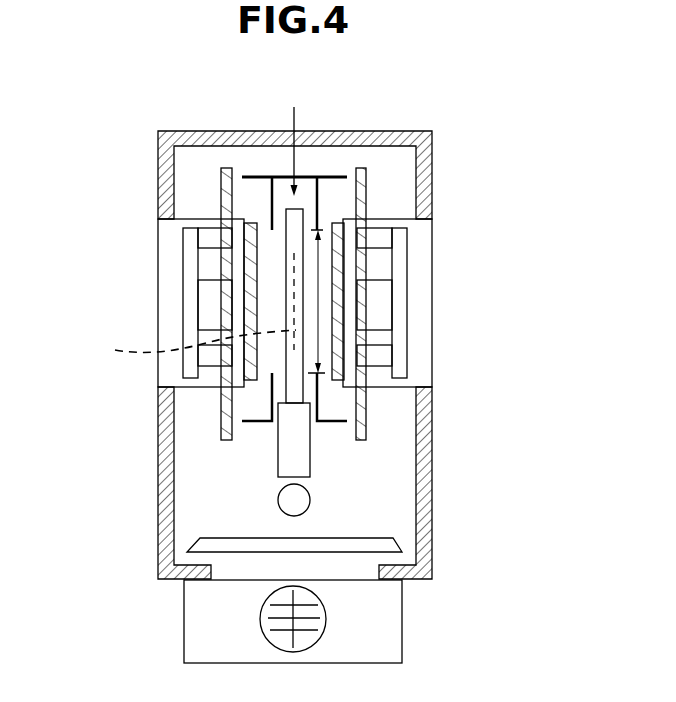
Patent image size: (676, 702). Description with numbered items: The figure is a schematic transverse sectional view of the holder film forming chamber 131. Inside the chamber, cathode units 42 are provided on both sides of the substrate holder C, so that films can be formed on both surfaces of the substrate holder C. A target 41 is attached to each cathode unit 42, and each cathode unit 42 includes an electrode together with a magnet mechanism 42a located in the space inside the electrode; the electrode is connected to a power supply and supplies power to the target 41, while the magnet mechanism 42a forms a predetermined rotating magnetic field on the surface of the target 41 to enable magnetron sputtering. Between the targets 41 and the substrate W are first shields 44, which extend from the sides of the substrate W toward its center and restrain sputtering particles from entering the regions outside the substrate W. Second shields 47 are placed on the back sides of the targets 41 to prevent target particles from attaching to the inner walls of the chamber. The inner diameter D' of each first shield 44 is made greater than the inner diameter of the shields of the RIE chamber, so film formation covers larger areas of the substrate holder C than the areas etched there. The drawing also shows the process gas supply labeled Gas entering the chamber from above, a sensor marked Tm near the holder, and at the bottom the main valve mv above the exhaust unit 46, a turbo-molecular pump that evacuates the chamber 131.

The holder film forming chamber 131 is at (159, 177).
The cathode unit 42 is at (398, 218).
The magnet mechanism 42a is at (397, 281).
The target 41 is at (337, 337).
The second shield 47 is at (367, 171).
The first shield 44 is at (333, 176).
The process gas supply Gas is at (287, 139).
The substrate holder C is at (310, 462).
The inner diameter of first shield D' is at (312, 301).
The substrate W is at (190, 346).
The temperature sensor Tm is at (310, 497).
The main valve mv is at (398, 547).
The exhaust unit 46 is at (402, 630).